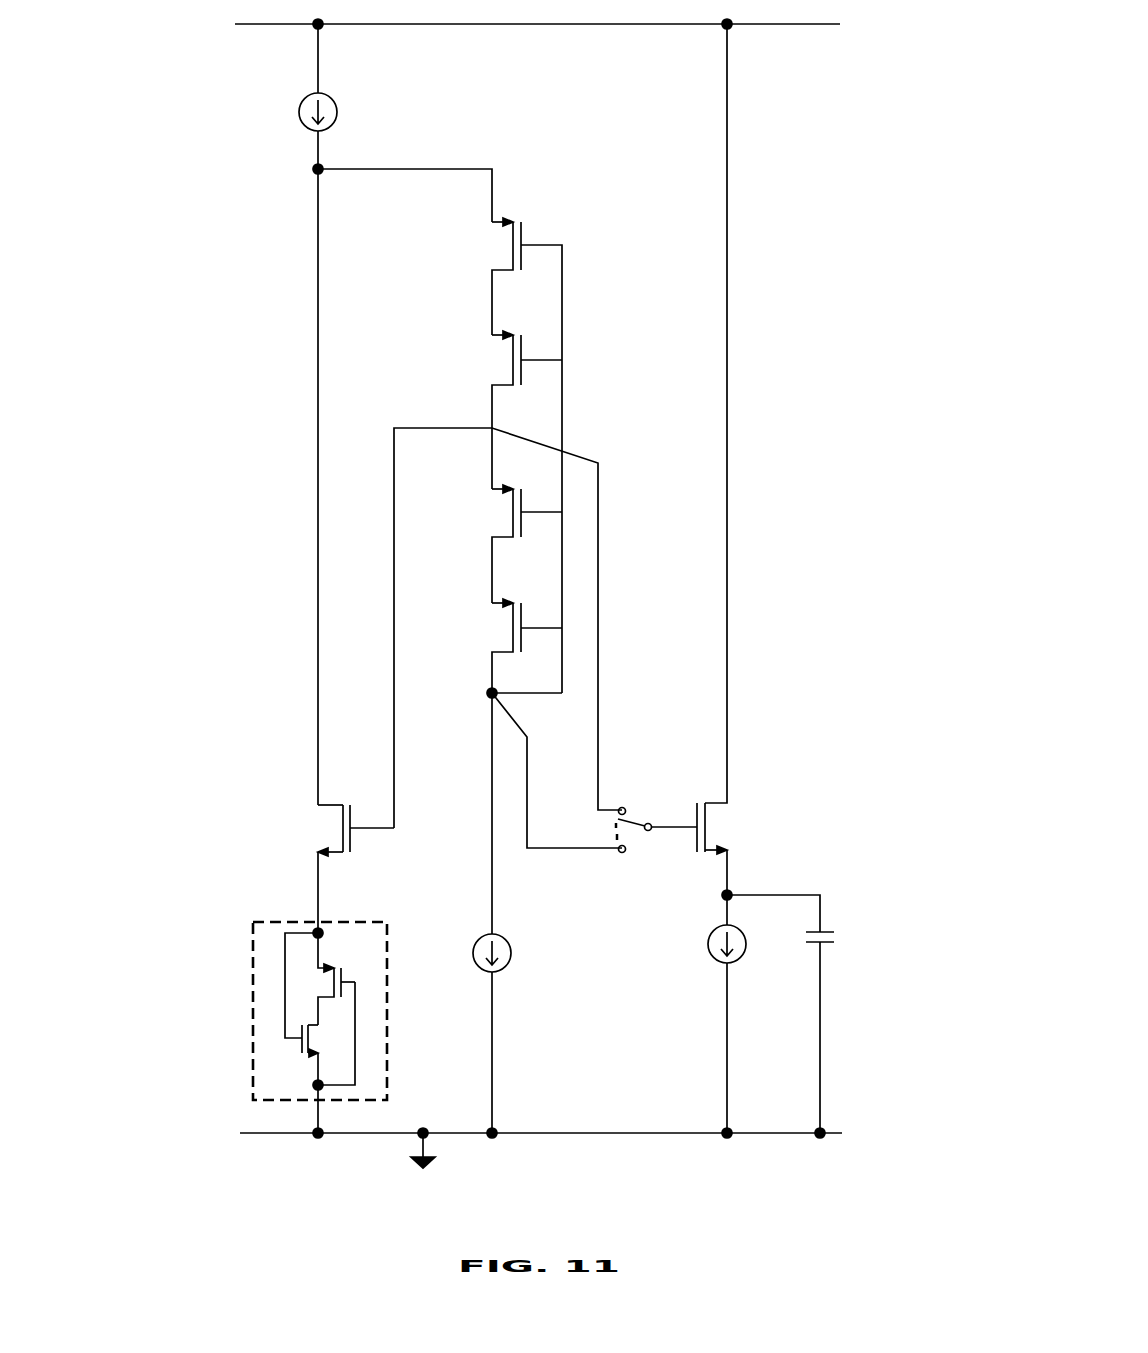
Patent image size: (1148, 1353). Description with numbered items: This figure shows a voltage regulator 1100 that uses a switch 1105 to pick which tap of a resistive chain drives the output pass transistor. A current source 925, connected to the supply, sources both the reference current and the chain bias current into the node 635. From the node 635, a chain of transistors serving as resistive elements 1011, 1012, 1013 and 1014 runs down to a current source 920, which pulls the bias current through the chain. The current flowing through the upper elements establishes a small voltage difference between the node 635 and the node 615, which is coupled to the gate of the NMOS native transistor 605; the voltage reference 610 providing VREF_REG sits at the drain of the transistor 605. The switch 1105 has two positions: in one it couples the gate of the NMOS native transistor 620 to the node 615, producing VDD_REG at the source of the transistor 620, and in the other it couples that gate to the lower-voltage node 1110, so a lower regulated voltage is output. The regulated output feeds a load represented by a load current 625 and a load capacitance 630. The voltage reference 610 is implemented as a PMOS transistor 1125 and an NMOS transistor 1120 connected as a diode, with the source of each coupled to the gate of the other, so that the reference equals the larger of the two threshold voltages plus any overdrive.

The voltage regulator 1100 is at (457, 586).
The current source 925 is at (356, 96).
The node 635 is at (377, 477).
The resistive element 1011 is at (537, 449).
The resistive element 1012 is at (527, 391).
The node 615 is at (508, 628).
The resistive element 1013 is at (527, 531).
The resistive element 1014 is at (527, 630).
The node 1110 is at (527, 811).
The switch 1105 is at (656, 818).
The NMOS native transistor 620 is at (695, 459).
The NMOS native transistor 605 is at (333, 869).
The voltage reference 610 is at (347, 1027).
The PMOS transistor 1125 is at (324, 979).
The NMOS transistor 1120 is at (327, 1055).
The current source 920 is at (522, 1025).
The load current 625 is at (742, 1004).
The voltage source 630 is at (806, 1014).